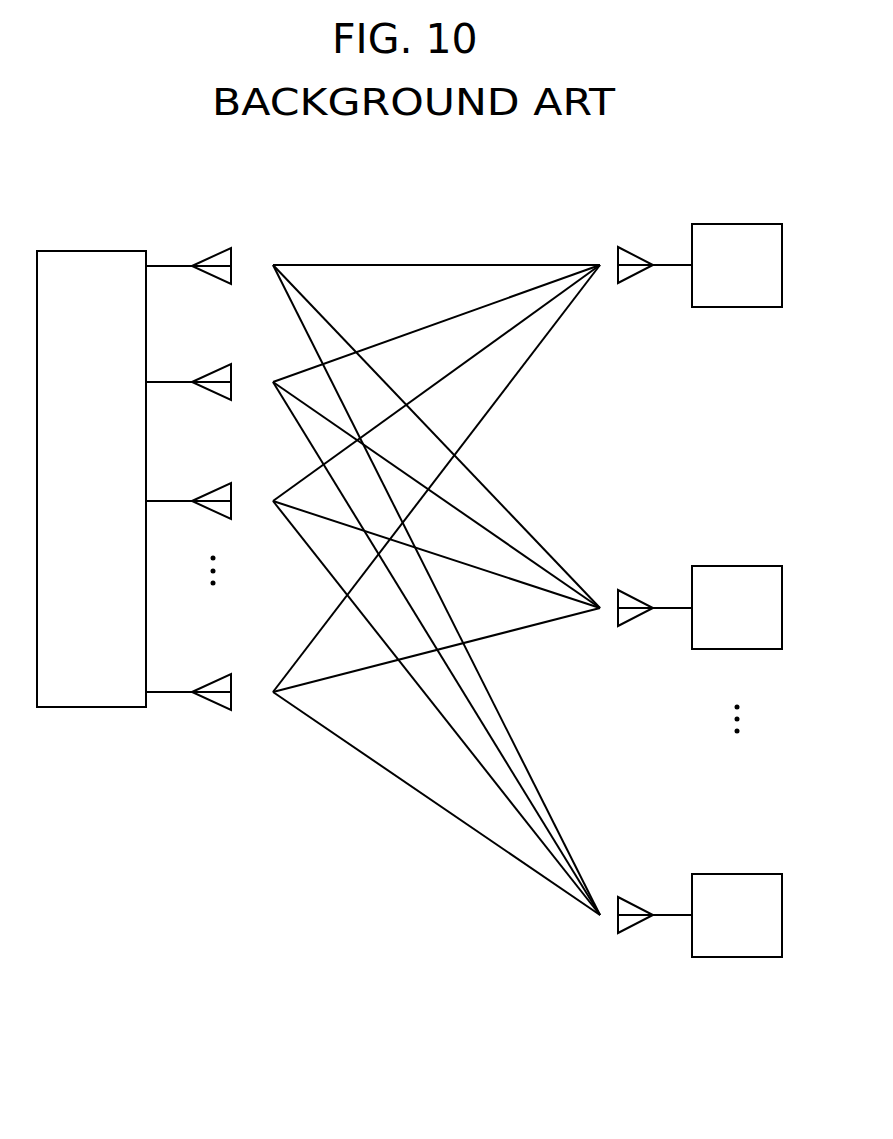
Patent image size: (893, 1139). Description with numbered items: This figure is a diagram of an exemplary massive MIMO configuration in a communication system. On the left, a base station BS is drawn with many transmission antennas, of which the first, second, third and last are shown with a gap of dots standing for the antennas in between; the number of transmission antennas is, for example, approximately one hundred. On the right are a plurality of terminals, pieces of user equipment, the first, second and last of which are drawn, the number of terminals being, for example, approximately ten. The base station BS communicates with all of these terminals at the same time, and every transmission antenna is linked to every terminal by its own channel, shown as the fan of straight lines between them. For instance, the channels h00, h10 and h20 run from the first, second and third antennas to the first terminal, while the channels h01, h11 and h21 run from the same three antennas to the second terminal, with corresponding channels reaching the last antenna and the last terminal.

The base station BS is at (91, 479).
The channel h00 is at (411, 262).
The channel h10 is at (410, 332).
The channel h20 is at (421, 394).
The channel h01 is at (483, 479).
The channel h11 is at (480, 521).
The channel h21 is at (485, 569).